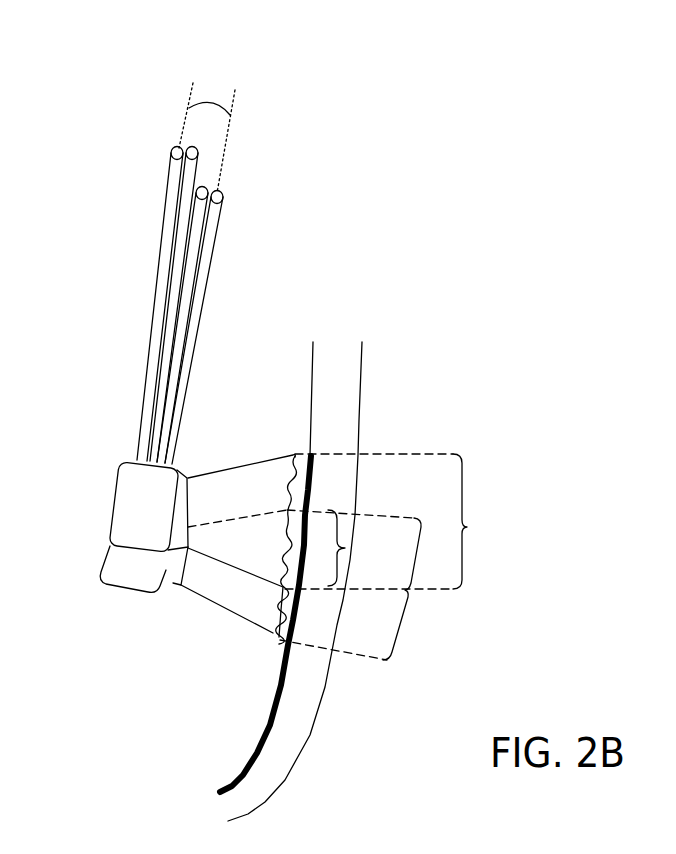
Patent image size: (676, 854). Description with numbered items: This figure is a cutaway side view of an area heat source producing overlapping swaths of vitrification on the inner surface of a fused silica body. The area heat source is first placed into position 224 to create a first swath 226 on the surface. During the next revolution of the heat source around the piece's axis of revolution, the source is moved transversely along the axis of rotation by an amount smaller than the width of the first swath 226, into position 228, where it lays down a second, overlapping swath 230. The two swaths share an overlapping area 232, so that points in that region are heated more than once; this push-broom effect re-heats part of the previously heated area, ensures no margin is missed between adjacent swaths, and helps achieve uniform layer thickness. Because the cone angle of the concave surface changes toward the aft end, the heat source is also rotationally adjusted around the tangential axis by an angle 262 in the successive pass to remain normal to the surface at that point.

The angle 262 is at (213, 102).
The position 228 is at (127, 463).
The position 224 is at (107, 583).
The second, overlapping swath 230 is at (395, 521).
The overlapping area 232 is at (351, 548).
The first swath 226 is at (366, 589).